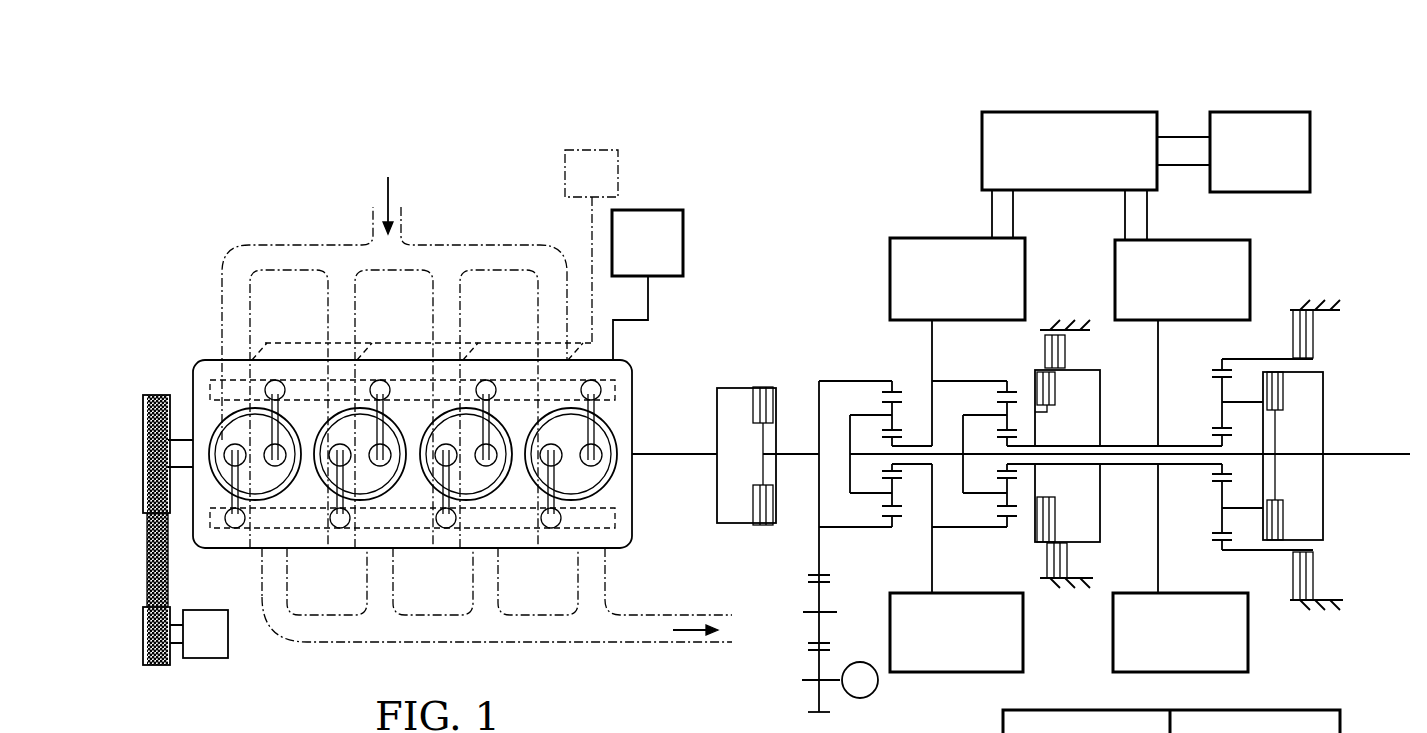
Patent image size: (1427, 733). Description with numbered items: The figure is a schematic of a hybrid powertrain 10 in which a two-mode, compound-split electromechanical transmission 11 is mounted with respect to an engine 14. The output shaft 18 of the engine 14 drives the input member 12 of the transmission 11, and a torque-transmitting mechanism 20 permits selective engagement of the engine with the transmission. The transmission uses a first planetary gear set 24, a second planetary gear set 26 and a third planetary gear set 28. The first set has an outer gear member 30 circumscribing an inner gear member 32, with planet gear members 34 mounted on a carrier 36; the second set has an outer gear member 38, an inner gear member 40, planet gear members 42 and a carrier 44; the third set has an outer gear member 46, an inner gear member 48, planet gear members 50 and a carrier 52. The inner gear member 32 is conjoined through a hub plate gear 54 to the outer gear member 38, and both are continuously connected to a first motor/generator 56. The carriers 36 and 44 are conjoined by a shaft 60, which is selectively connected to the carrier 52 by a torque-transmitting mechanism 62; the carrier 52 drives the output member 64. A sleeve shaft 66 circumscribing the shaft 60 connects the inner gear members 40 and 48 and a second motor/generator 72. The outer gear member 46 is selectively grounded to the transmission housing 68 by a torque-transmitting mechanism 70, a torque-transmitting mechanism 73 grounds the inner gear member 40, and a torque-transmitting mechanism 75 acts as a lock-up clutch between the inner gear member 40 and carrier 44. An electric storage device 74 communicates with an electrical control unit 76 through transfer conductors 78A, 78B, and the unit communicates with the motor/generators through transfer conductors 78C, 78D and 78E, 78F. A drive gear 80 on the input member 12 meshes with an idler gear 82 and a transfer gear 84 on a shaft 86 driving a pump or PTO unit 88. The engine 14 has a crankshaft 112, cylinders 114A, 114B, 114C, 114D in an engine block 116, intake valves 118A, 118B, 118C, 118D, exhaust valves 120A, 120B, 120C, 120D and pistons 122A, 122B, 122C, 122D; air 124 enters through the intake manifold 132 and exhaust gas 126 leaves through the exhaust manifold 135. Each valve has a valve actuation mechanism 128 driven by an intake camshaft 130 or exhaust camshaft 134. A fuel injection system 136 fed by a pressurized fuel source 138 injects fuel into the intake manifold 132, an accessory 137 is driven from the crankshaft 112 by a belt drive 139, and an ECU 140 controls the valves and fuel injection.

The hybrid powertrain 10 is at (700, 156).
The electromechanical transmission 11 is at (764, 246).
The input member 12 is at (798, 452).
The engine 14 is at (296, 192).
The output shaft 18 is at (697, 445).
The torque-transmitting mechanism 20 is at (740, 362).
The first planetary gear set 24 is at (876, 360).
The second planetary gear set 26 is at (989, 360).
The third planetary gear set 28 is at (1208, 348).
The outer gear member 30 is at (896, 390).
The inner gear member 32 is at (895, 437).
The planet gear members 34 is at (886, 403).
The carrier 36 is at (850, 478).
The outer gear member 38 is at (1010, 390).
The inner gear member 40 is at (1014, 440).
The planet gear members 42 is at (1000, 403).
The carrier 44 is at (963, 478).
The outer gear member 46 is at (1212, 370).
The inner gear member 48 is at (1212, 440).
The planet gear members 50 is at (1218, 392).
The carrier 52 is at (1326, 402).
The hub plate gear 54 is at (935, 430).
The first motor/generator 56 is at (957, 455).
The shaft 60 is at (1133, 464).
The torque-transmitting mechanism 62 is at (1287, 415).
The output member 64 is at (1353, 456).
The sleeve shaft 66 is at (1120, 446).
The transmission housing 68 is at (1326, 305).
The torque-transmitting mechanism 70 is at (1286, 322).
The second motor/generator 72 is at (1181, 456).
The torque-transmitting mechanism 73 is at (1080, 356).
The electric storage device 74 is at (1260, 152).
The torque-transmitting mechanism 75 is at (1063, 412).
The electrical control unit 76 is at (1069, 151).
The transfer conductor 78A is at (1184, 135).
The transfer conductor 78B is at (1184, 167).
The transfer conductor 78C is at (990, 215).
The transfer conductor 78D is at (1015, 215).
The transfer conductor 78E is at (1123, 215).
The transfer conductor 78F is at (1150, 215).
The drive gear 80 is at (818, 505).
The idler gear 82 is at (815, 605).
The transfer gear 84 is at (817, 658).
The shaft 86 is at (827, 683).
The transmission fluid pump and/or PTO unit 88 is at (868, 695).
The crankshaft 112 is at (182, 440).
The cylinder 114A is at (260, 500).
The cylinder 114B is at (365, 500).
The cylinder 114C is at (471, 500).
The cylinder 114D is at (576, 500).
The engine block 116 is at (217, 360).
The intake valve 118A is at (220, 528).
The intake valve 118B is at (325, 528).
The intake valve 118C is at (431, 528).
The intake valve 118D is at (536, 528).
The exhaust valve 120A is at (283, 380).
The exhaust valve 120B is at (388, 380).
The exhaust valve 120C is at (494, 380).
The exhaust valve 120D is at (603, 452).
The piston 122A is at (247, 357).
The piston 122B is at (352, 357).
The piston 122C is at (458, 357).
The piston 122D is at (578, 385).
The air 124 is at (388, 190).
The exhaust gas 126 is at (690, 632).
The valve actuation mechanism 128 is at (237, 444).
The intake camshaft 130 is at (615, 390).
The intake manifold 132 is at (278, 245).
The exhaust camshaft 134 is at (616, 522).
The exhaust manifold 135 is at (536, 642).
The fuel injection system 136 is at (595, 325).
The accessory 137 is at (228, 640).
The pressurized fuel source 138 is at (565, 172).
The belt drive 139 is at (143, 548).
The ECU 140 is at (647, 285).